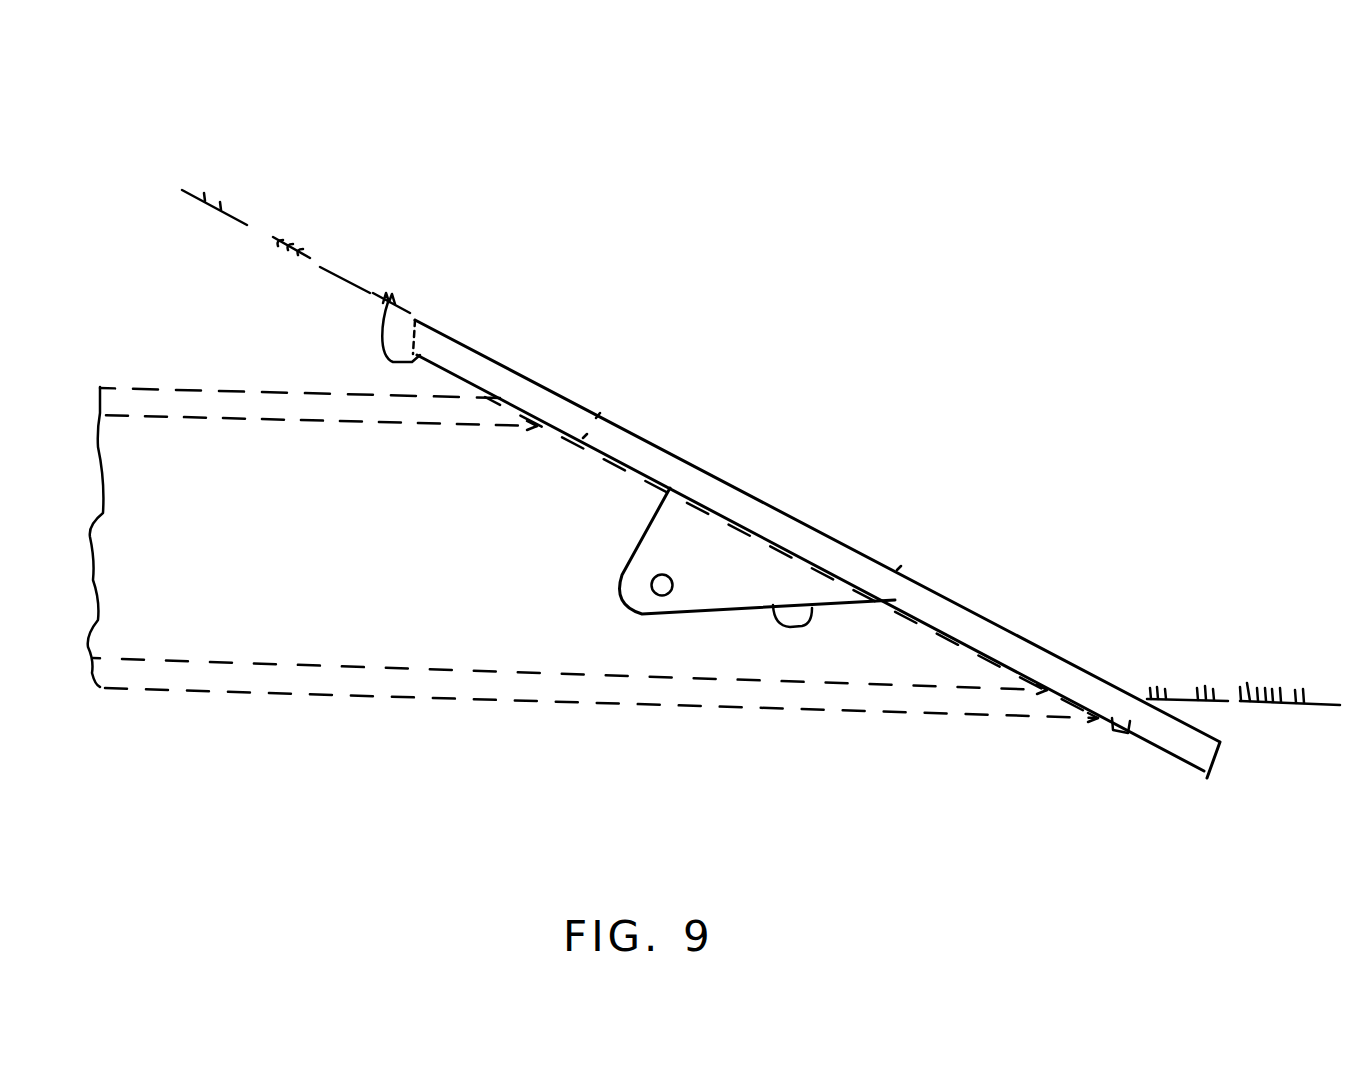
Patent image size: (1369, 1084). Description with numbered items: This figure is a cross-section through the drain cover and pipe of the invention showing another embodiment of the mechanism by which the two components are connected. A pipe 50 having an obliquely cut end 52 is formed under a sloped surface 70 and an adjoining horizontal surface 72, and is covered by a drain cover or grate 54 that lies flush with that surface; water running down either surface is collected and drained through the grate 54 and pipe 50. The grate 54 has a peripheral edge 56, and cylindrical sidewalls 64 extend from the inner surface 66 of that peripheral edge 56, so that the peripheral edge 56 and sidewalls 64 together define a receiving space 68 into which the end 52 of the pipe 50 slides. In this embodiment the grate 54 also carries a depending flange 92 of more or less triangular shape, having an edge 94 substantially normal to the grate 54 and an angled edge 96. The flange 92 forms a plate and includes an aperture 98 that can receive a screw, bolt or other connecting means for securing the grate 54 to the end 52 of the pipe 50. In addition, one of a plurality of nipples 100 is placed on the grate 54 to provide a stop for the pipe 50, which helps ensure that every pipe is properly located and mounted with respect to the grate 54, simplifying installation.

The pipe 50 is at (207, 688).
The end of the pipe 52 is at (862, 665).
The grate 54 is at (968, 565).
The peripheral edge 56 is at (1005, 637).
The cylindrical sidewalls 64 is at (186, 384).
The inner surface of the peripheral edge 66 is at (396, 296).
The receiving space 68 is at (510, 470).
The surface 70 is at (272, 220).
The horizontal surface 72 is at (1248, 697).
The depending flange 92 is at (713, 553).
The edge of the flange 94 is at (645, 516).
The angled edge 96 is at (807, 612).
The aperture 98 is at (612, 577).
The nipple 100 is at (1133, 749).